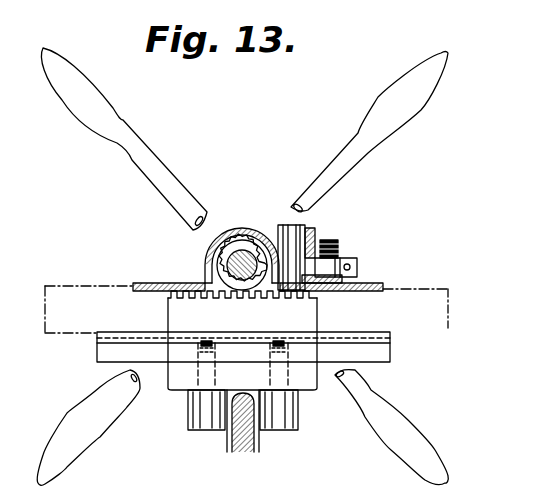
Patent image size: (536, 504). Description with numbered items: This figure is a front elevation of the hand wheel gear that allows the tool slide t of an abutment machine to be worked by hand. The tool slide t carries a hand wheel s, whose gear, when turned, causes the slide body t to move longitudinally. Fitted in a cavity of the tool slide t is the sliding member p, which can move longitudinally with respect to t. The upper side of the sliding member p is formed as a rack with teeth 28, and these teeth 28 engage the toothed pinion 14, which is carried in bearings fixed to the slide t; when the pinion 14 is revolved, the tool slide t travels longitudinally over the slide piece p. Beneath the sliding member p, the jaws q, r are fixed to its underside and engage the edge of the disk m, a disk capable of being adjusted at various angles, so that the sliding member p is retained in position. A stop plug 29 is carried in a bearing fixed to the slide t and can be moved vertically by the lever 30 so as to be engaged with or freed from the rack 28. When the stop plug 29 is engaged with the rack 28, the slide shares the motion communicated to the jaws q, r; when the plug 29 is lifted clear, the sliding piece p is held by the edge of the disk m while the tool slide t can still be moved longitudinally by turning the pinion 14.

The toothed pinion 14 is at (243, 228).
The rack teeth 28 is at (263, 293).
The stop plug 29 is at (300, 228).
The lever 30 is at (345, 257).
The sliding member p is at (180, 313).
The tool slide t is at (423, 302).
The jaw roller q is at (188, 410).
The jaw roller r is at (299, 410).
The disk m is at (257, 445).
The hand wheel s is at (362, 146).